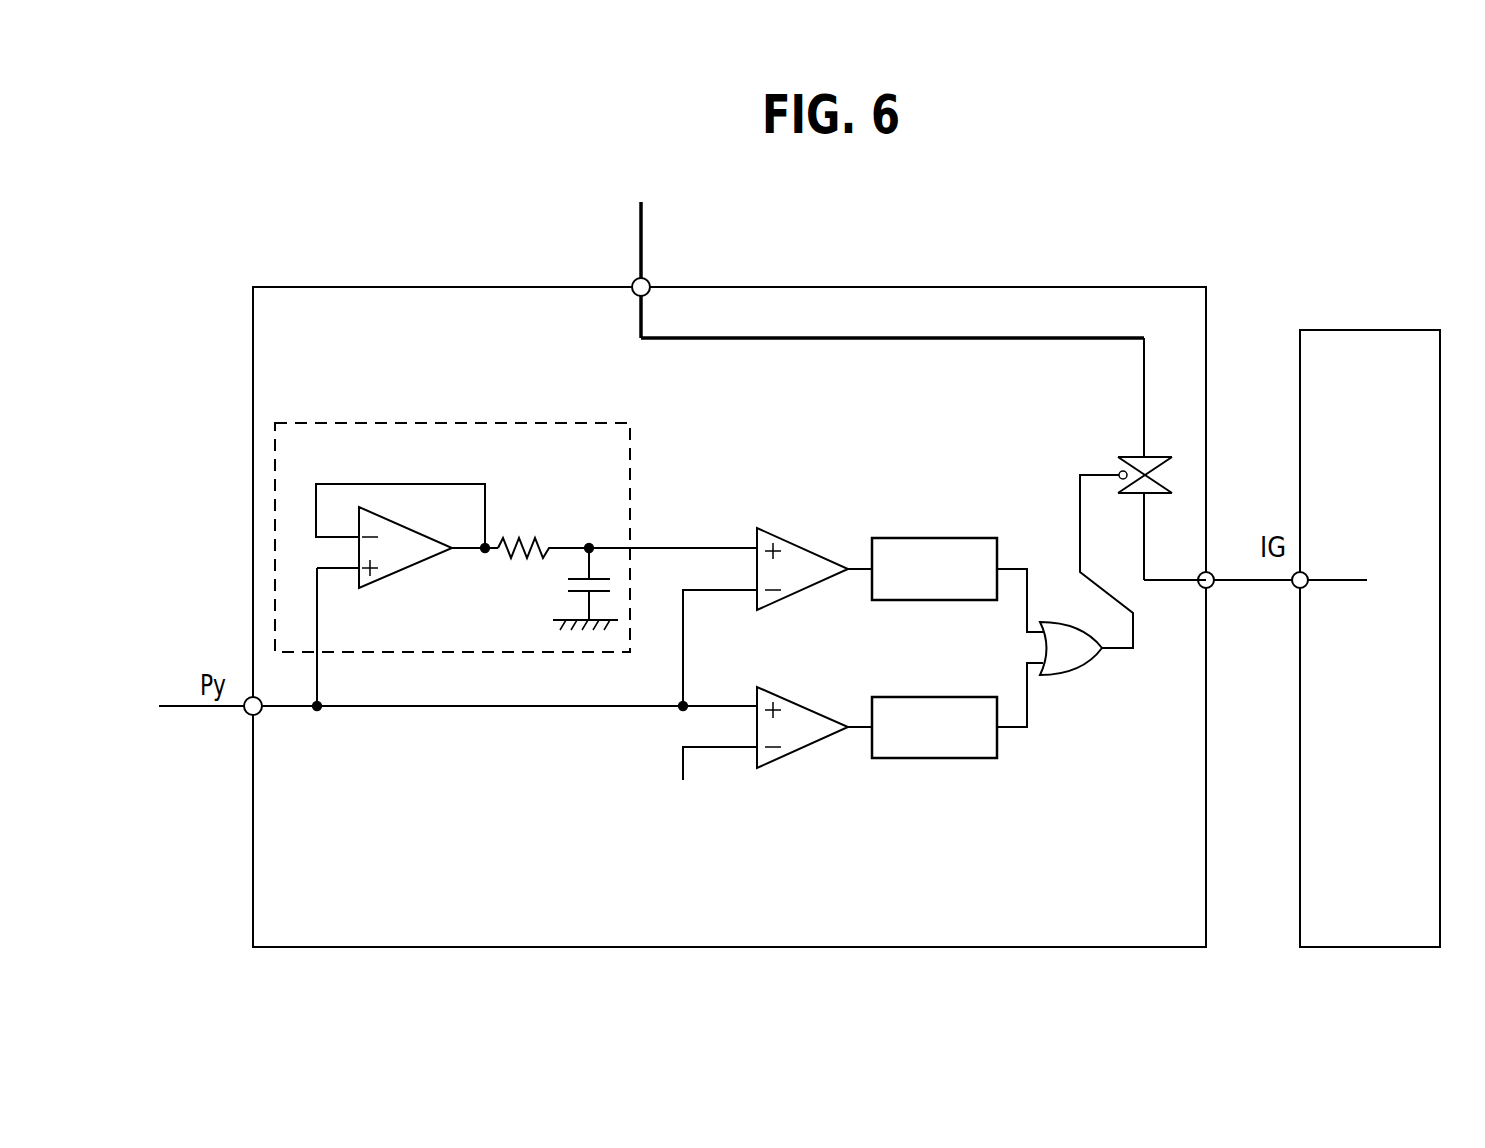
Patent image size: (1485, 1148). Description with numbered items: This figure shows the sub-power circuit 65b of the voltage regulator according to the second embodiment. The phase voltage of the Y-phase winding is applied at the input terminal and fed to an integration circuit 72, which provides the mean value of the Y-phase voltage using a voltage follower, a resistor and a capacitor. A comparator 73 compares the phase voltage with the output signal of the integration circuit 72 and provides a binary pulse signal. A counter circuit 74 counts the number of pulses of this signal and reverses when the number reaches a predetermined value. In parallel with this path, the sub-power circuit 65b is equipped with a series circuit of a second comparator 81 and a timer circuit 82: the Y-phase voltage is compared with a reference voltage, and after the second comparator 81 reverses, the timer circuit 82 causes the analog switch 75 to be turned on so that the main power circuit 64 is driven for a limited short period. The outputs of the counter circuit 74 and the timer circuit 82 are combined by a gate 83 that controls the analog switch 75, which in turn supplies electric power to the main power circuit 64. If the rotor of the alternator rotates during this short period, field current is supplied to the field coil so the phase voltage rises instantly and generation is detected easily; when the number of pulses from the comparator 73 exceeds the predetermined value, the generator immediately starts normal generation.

The main power circuit 64 is at (1361, 330).
The sub-power circuit 65b is at (916, 287).
The integration circuit 72 is at (572, 422).
The comparator 73 is at (815, 545).
The counter circuit 74 is at (949, 538).
The analog switch 75 is at (1160, 457).
The second comparator 81 is at (815, 705).
The timer circuit 82 is at (949, 697).
The OR gate 83 is at (1083, 670).